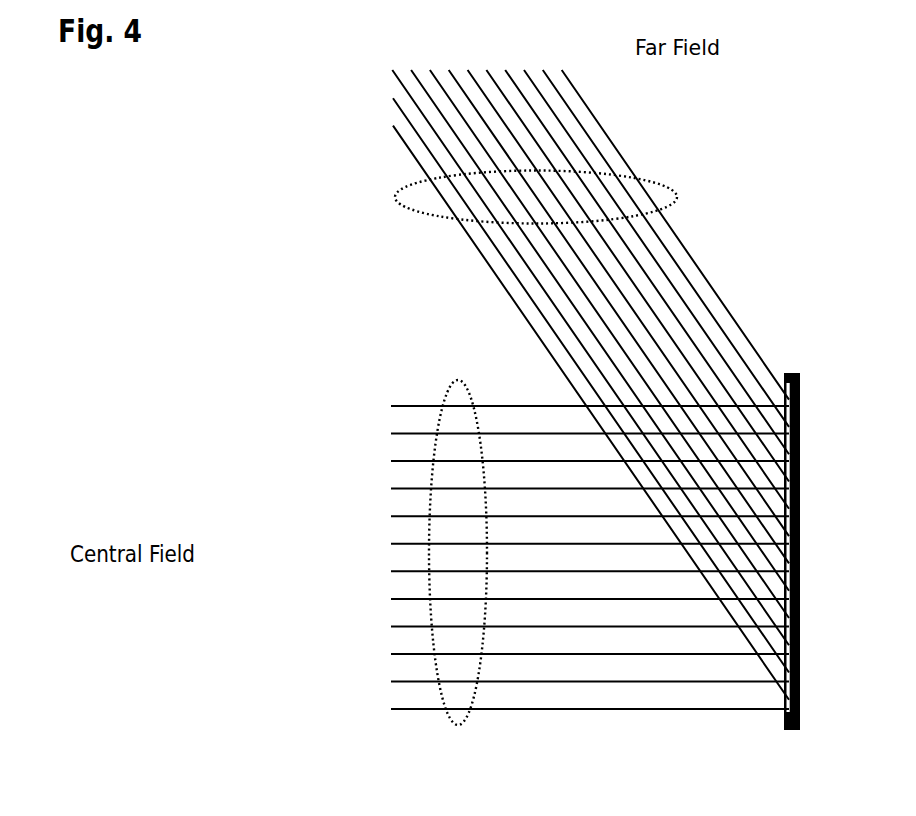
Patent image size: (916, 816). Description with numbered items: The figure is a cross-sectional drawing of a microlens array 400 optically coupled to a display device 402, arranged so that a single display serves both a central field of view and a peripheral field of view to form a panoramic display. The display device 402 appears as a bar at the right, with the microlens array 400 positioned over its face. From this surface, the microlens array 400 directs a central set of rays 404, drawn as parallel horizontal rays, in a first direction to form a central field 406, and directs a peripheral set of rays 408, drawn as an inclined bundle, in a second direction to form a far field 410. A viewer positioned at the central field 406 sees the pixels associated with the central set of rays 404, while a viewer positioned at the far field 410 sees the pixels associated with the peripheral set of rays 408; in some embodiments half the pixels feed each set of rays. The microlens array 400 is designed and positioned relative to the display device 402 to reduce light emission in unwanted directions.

The microlens array 400 is at (784, 711).
The display device 402 is at (800, 382).
The central set of rays 404 is at (441, 395).
The central field 406 is at (332, 406).
The peripheral set of rays 408 is at (390, 193).
The far field 410 is at (585, 80).